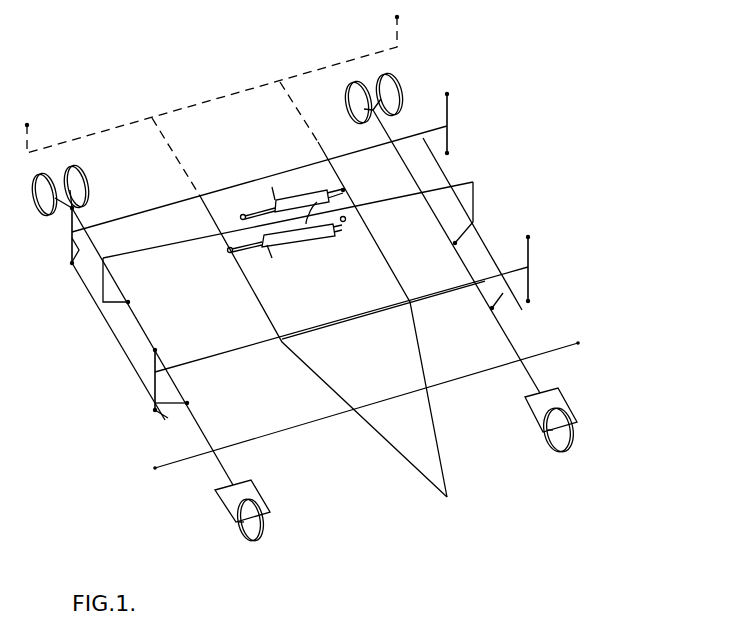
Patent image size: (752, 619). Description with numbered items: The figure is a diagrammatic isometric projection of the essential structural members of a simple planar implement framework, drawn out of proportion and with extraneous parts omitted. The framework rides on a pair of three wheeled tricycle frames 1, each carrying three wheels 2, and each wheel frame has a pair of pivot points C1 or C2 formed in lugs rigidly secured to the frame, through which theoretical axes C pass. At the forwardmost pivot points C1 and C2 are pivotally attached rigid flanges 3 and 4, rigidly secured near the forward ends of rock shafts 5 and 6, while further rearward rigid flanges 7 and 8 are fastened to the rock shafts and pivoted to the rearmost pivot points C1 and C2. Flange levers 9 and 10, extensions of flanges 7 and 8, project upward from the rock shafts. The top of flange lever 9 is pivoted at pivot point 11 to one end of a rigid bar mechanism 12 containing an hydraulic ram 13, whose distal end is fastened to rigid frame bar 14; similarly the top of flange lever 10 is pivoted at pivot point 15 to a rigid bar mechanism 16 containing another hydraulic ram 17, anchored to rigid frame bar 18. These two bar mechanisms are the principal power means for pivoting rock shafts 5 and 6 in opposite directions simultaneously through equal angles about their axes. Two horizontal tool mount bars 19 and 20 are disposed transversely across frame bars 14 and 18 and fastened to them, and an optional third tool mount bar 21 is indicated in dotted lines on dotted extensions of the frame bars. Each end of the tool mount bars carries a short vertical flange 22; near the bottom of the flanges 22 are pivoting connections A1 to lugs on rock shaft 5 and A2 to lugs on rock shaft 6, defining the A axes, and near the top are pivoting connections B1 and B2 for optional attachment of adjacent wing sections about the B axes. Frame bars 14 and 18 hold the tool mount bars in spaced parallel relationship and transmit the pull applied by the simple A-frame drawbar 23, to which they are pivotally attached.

The three wheeled tricycle frame 1 is at (228, 472).
The wheel 2 is at (85, 178).
The rigid flange 3 is at (175, 417).
The rigid flange 4 is at (503, 293).
The rock shaft 5 is at (123, 340).
The rock shaft 6 is at (485, 248).
The rigid flange 7 is at (112, 305).
The rigid flange 8 is at (469, 215).
The flange lever 9 is at (96, 304).
The flange lever 10 is at (473, 182).
The pivot point 11 is at (87, 269).
The rigid bar mechanism 12 is at (167, 239).
The hydraulic ram 13 is at (293, 190).
The rigid frame bar 14 is at (402, 287).
The pivot point 15 is at (475, 181).
The rigid bar mechanism 16 is at (375, 212).
The hydraulic ram 17 is at (293, 243).
The rigid frame bar 18 is at (280, 323).
The tool mount bar 19 is at (252, 348).
The tool mount bar 20 is at (174, 200).
The tool mount bar 21 is at (188, 112).
The vertical flange 22 is at (70, 229).
The drawbar 23 is at (438, 440).
The pivoting connection A1 is at (67, 265).
The pivoting connection A2 is at (447, 153).
The pivoting connection B1 is at (27, 125).
The pivoting connection B2 is at (397, 17).
The pivot point C1 is at (128, 302).
The pivot point C2 is at (455, 243).